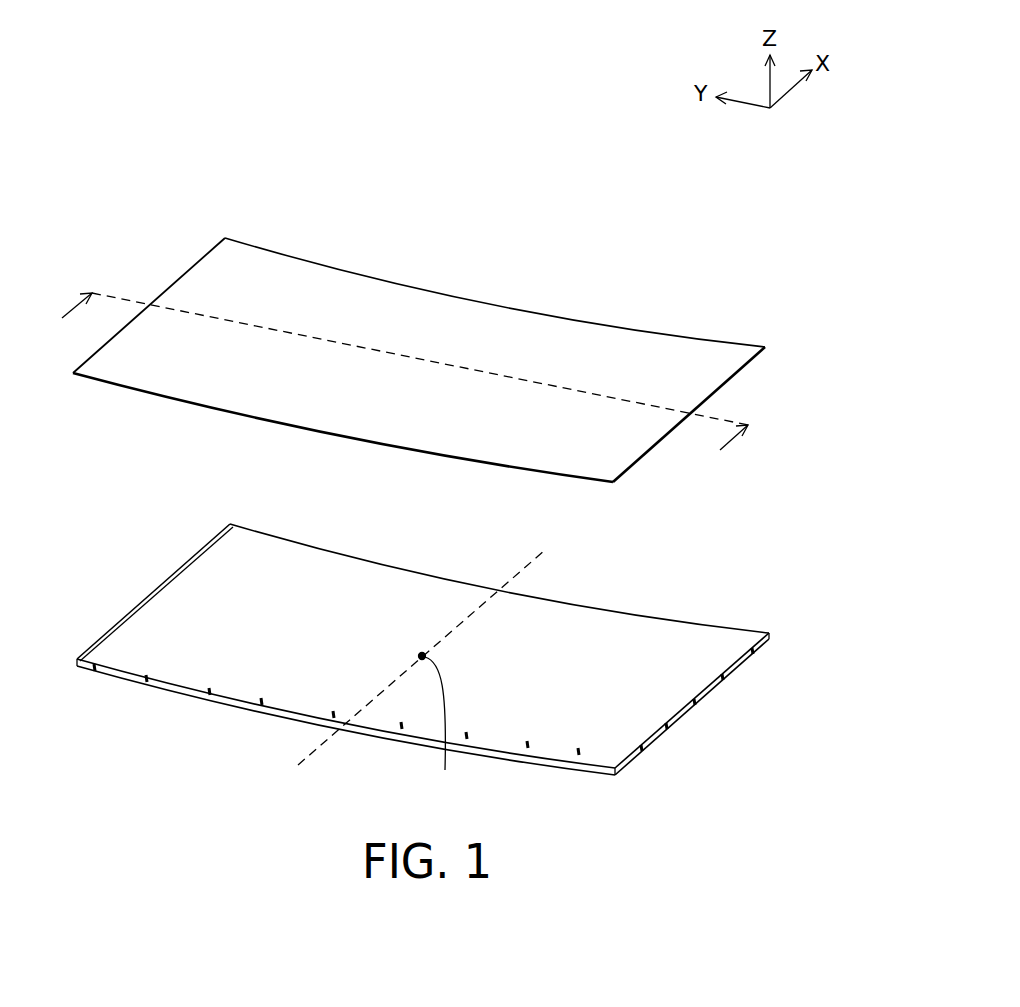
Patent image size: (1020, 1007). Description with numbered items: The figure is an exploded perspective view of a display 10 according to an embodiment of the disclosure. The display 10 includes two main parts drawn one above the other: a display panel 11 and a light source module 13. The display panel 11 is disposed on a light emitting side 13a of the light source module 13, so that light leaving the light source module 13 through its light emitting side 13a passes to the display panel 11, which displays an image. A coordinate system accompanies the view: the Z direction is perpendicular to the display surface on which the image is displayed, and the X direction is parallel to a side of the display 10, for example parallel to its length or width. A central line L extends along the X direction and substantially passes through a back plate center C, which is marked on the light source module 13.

The display 10 is at (70, 159).
The display panel 11 is at (745, 365).
The light source module 13 is at (428, 662).
The light emitting side 13a is at (643, 658).